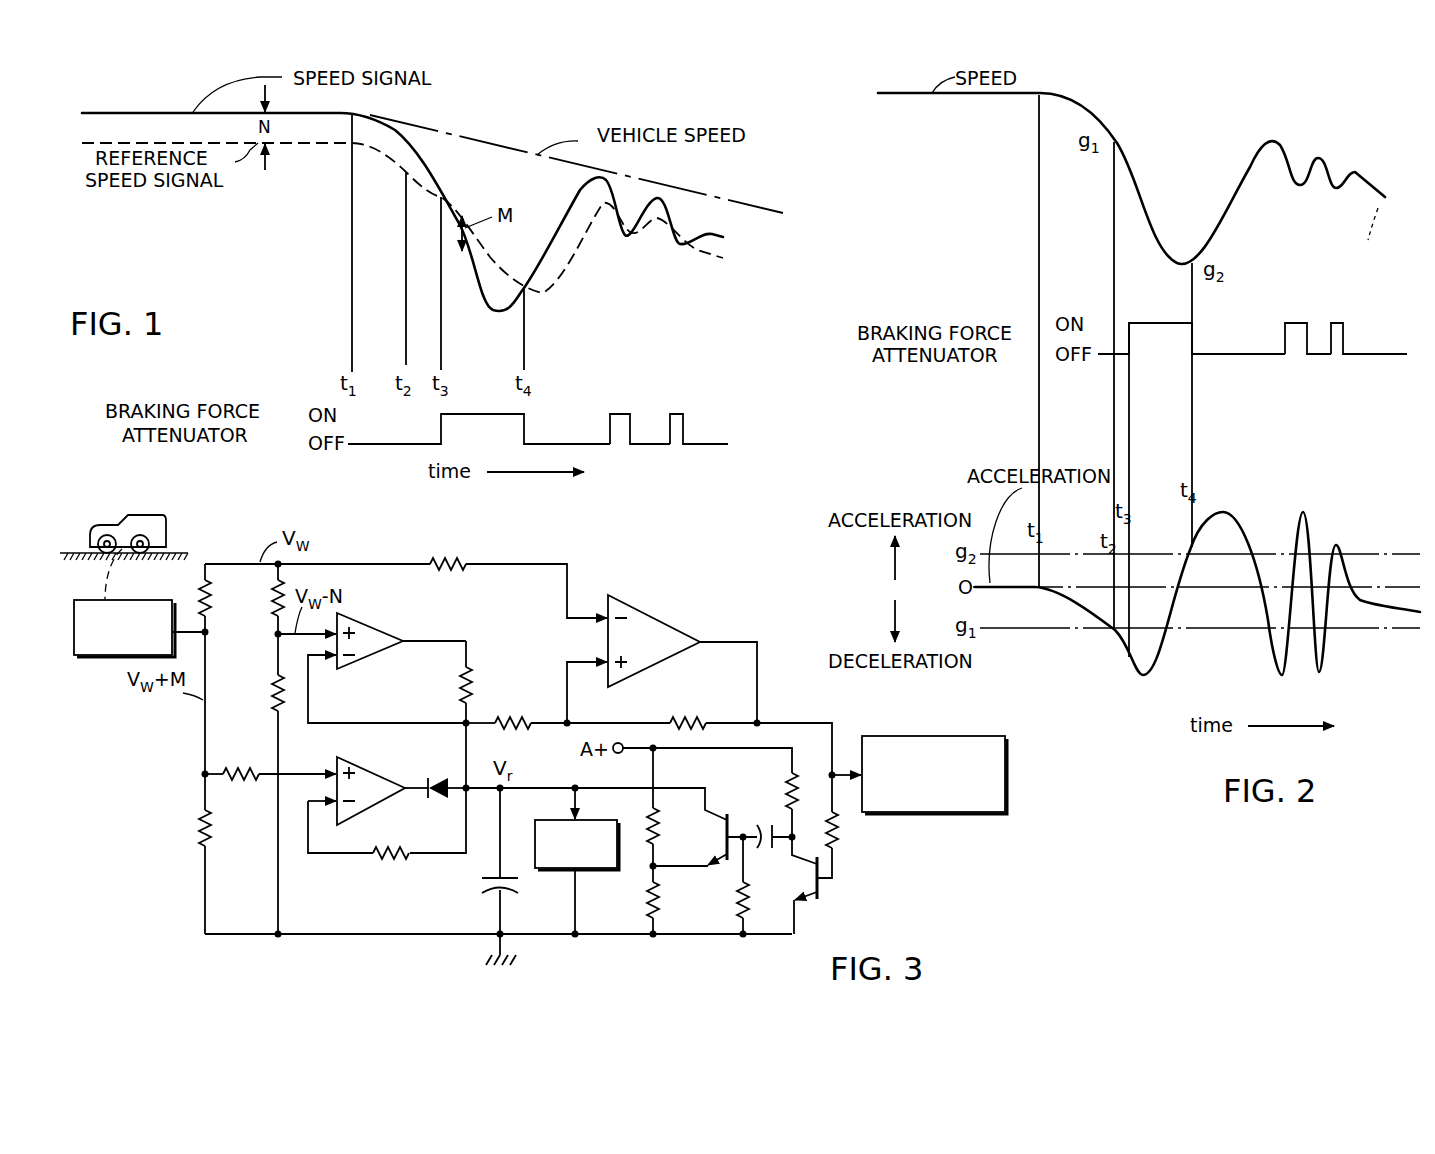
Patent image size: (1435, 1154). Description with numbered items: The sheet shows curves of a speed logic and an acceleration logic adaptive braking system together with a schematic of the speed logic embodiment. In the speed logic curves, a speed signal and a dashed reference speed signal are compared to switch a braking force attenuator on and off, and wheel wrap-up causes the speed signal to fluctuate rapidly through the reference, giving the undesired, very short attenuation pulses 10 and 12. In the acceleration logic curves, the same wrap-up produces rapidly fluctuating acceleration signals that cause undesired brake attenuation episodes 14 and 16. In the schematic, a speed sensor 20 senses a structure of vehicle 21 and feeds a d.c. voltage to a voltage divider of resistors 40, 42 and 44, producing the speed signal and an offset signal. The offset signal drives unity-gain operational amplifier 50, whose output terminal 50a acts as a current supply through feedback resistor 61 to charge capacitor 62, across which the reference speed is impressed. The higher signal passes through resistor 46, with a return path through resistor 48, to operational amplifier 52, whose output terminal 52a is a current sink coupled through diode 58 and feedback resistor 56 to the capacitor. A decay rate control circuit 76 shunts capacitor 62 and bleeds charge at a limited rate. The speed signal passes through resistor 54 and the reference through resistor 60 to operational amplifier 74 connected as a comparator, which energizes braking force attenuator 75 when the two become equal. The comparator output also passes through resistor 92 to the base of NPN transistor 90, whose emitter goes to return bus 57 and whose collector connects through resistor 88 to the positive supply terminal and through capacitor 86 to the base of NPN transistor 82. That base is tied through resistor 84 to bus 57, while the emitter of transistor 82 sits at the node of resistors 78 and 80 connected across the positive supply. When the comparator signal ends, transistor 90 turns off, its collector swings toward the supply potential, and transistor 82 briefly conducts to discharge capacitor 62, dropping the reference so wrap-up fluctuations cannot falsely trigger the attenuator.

In FIG. 1, the pulse 10 is at (617, 412).
In FIG. 1, the pulse 12 is at (676, 412).
In FIG. 2, the brake attenuation episode 14 is at (1293, 325).
In FIG. 2, the brake attenuation episode 16 is at (1340, 325).
In FIG. 3, the speed sensor 20 is at (137, 601).
In FIG. 3, the vehicle 21 is at (140, 514).
In FIG. 3, the resistor 40 is at (207, 606).
In FIG. 3, the resistor 42 is at (273, 607).
In FIG. 3, the resistor 44 is at (273, 683).
In FIG. 3, the resistor 46 is at (242, 767).
In FIG. 3, the resistor 48 is at (200, 825).
In FIG. 3, the operational amplifier 50 is at (367, 622).
In FIG. 3, the output terminal 50a is at (425, 643).
In FIG. 3, the operational amplifier 52 is at (362, 763).
In FIG. 3, the output terminal 52a is at (415, 790).
In FIG. 3, the resistor 54 is at (463, 567).
In FIG. 3, the resistor 56 is at (390, 858).
In FIG. 3, the return bus 57 is at (437, 937).
In FIG. 3, the diode 58 is at (437, 775).
In FIG. 3, the resistor 60 is at (517, 713).
In FIG. 3, the feedback resistor 61 is at (470, 683).
In FIG. 3, the capacitor 62 is at (480, 883).
In FIG. 3, the operational amplifier 74 is at (647, 613).
In FIG. 3, the braking force attenuator 75 is at (952, 815).
In FIG. 3, the decay rate control circuit 76 is at (592, 820).
In FIG. 3, the resistor 78 is at (657, 820).
In FIG. 3, the resistor 80 is at (650, 892).
In FIG. 3, the NPN transistor 82 is at (723, 831).
In FIG. 3, the resistor 84 is at (740, 892).
In FIG. 3, the capacitor 86 is at (763, 823).
In FIG. 3, the resistor 88 is at (790, 777).
In FIG. 3, the NPN transistor 90 is at (813, 877).
In FIG. 3, the resistor 92 is at (835, 833).